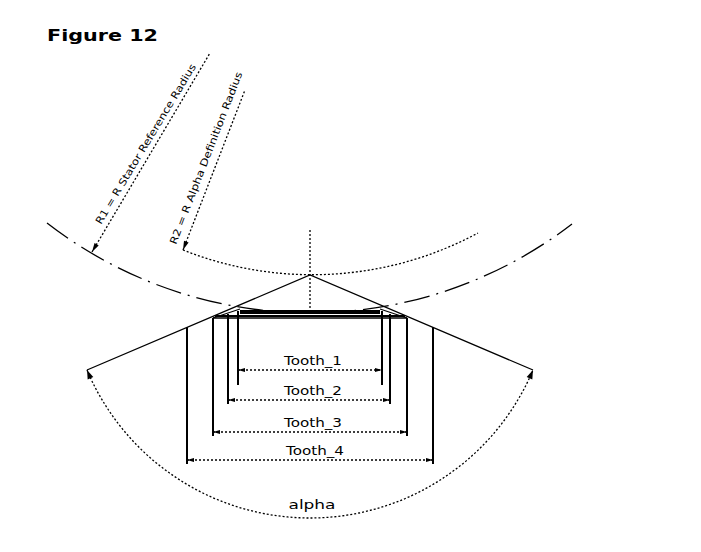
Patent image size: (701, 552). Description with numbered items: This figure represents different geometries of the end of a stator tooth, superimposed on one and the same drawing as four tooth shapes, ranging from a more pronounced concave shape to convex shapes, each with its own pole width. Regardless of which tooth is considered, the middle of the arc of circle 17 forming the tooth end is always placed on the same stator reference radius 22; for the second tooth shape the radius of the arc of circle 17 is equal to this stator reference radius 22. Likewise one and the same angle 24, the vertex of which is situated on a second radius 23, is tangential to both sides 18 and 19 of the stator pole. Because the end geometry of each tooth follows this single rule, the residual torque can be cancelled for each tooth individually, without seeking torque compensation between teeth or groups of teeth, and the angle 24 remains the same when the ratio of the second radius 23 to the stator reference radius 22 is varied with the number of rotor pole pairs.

The arc of circle forming the end of the tooth 17 is at (313, 308).
The side of the stator pole 18 is at (392, 305).
The side of the stator pole 19 is at (220, 307).
The stator reference radius R1 22 is at (92, 252).
The radius R2 23 is at (185, 250).
The angle alpha 24 is at (350, 512).